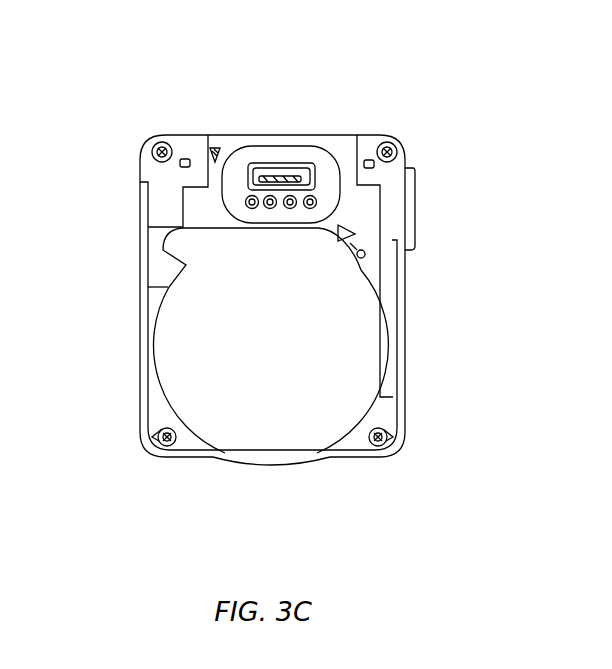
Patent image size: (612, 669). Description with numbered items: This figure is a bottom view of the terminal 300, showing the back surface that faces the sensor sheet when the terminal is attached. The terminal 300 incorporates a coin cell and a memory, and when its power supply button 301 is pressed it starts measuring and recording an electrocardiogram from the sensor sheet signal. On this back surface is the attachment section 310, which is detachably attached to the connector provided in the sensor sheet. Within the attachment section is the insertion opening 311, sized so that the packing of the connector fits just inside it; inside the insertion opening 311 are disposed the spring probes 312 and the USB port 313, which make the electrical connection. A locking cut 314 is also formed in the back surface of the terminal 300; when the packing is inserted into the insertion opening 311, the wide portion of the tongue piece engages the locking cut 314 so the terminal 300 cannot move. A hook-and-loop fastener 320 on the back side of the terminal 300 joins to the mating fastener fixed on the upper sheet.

The terminal 300 is at (392, 399).
The power supply button 301 is at (272, 459).
The attachment section 310 is at (317, 88).
The insertion opening 311 is at (327, 152).
The spring probes 312 is at (252, 209).
The USB port 313 is at (287, 165).
The locking cut 314 is at (218, 150).
The hook-and-loop fastener 320 is at (178, 382).